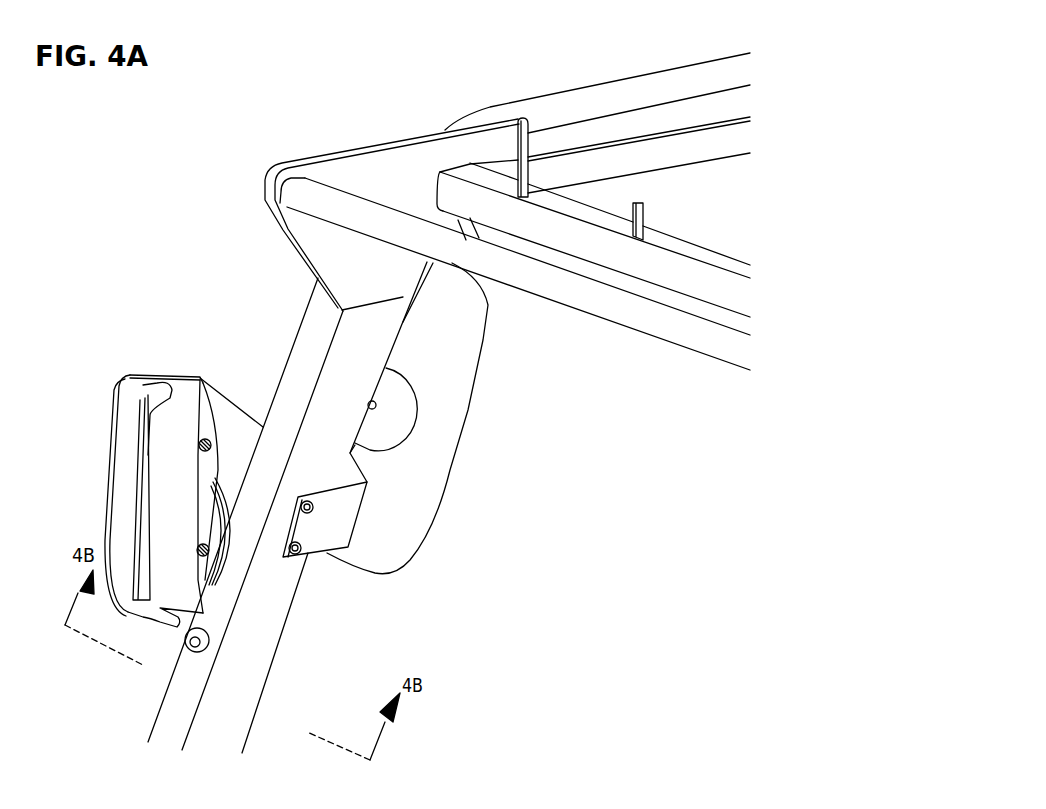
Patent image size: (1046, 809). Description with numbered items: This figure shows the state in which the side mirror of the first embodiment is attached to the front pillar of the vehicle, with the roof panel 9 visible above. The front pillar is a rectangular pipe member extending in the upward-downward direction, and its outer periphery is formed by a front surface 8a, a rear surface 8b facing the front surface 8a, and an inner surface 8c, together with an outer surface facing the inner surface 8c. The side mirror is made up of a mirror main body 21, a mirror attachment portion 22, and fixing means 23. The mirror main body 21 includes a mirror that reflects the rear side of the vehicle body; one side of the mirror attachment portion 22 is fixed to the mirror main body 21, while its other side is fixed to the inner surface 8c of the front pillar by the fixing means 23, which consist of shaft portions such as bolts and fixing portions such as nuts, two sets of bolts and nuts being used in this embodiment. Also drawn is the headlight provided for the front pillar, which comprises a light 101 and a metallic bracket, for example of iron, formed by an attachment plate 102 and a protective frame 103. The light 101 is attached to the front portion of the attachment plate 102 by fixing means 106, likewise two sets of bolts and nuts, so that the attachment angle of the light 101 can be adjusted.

The roof panel / carrier 9 is at (637, 103).
The front surface 8a is at (180, 703).
The rear surface 8b is at (255, 723).
The inner surface 8c is at (223, 713).
The mirror main body 21 is at (450, 378).
The mirror attachment portion 22 is at (340, 522).
The fixing means 23 is at (300, 552).
The light 101 is at (155, 392).
The attachment plate 102 is at (235, 447).
The protective frame 103 is at (163, 510).
The fixing means 106 is at (207, 553).